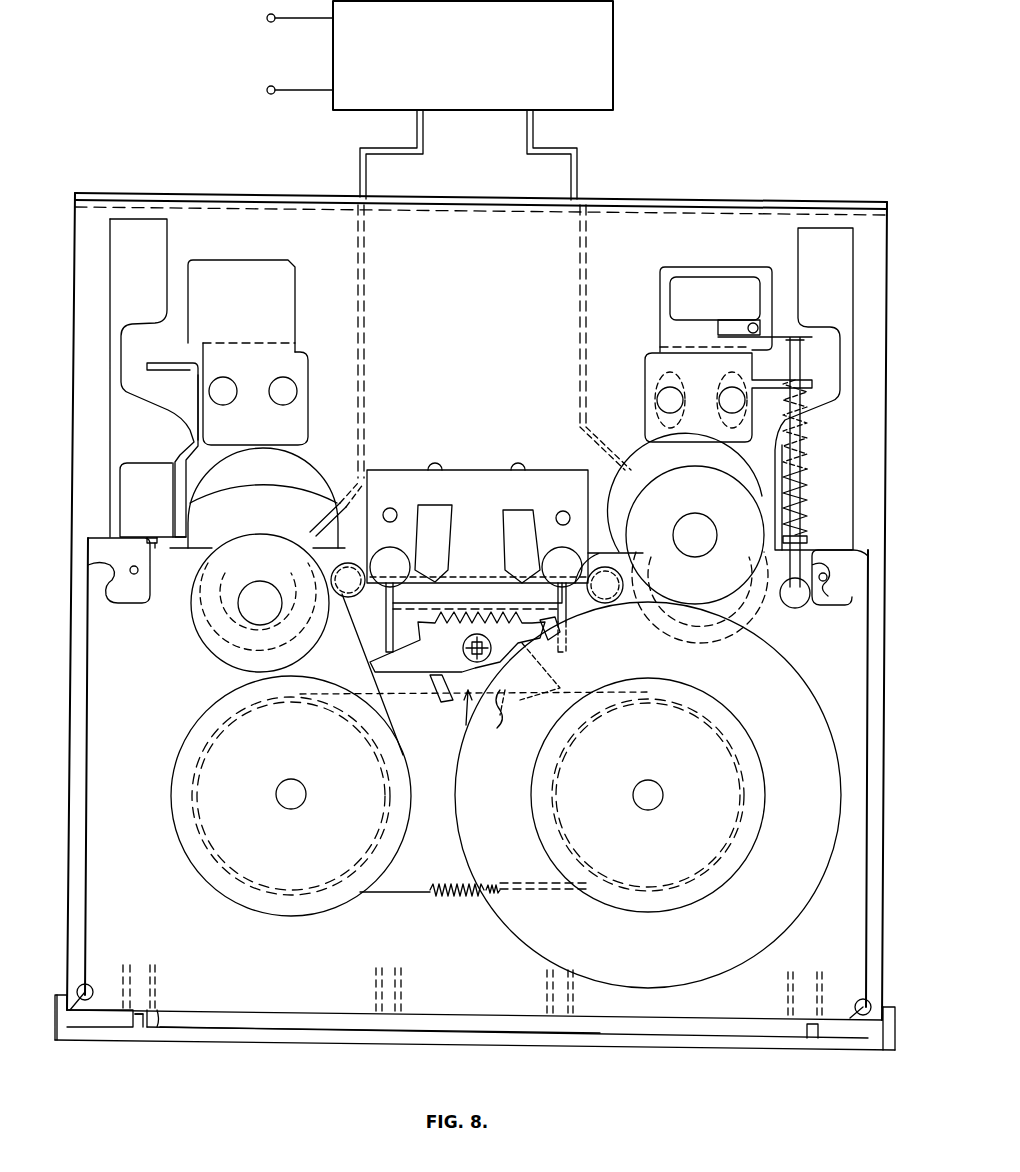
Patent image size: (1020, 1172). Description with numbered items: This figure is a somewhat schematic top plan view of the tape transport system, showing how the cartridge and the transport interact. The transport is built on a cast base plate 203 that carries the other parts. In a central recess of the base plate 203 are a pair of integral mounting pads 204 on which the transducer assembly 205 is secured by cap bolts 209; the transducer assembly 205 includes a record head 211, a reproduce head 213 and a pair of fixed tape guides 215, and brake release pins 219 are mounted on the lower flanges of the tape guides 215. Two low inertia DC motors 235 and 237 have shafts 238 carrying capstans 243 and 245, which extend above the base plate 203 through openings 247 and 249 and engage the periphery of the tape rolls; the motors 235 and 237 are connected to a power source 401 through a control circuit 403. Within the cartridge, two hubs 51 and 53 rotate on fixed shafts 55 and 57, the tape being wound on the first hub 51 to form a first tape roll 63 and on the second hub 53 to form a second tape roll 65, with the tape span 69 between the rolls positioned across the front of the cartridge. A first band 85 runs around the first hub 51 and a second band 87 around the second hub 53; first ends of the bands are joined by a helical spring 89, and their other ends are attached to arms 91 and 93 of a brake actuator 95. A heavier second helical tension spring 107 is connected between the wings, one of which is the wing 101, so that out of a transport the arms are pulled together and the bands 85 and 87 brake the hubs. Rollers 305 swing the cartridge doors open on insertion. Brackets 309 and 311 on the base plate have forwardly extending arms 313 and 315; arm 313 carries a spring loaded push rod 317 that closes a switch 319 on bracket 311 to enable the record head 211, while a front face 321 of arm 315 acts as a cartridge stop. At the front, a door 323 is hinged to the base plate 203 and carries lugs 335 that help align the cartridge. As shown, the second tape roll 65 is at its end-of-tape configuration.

The power source 401 is at (315, 68).
The control circuit 403 is at (613, 58).
The bracket 311 is at (295, 310).
The switch 319 is at (715, 285).
The bracket 309 is at (660, 303).
The spring loaded push rod 317 is at (800, 372).
The bracket arm 313 is at (772, 495).
The bracket arm 315 is at (178, 512).
The front face 321 is at (155, 545).
The cast base plate 203 is at (470, 353).
The opening 249 is at (290, 470).
The motor 237 is at (225, 495).
The capstan 245 is at (290, 545).
The motor shaft 238 is at (272, 597).
The mounting pads 204 is at (518, 463).
The transducer assembly 205 is at (479, 486).
The cap bolts 209 is at (568, 511).
The reproduce head 213 is at (435, 510).
The record head 211 is at (542, 490).
The fixed tape guides 215 is at (570, 560).
The brake release pins 219 is at (393, 601).
The tape span 69 is at (485, 580).
The motor 235 is at (636, 503).
The opening 247 is at (637, 458).
The capstan 243 is at (695, 535).
The wing 101 is at (473, 663).
The second helical tension spring 107 is at (568, 628).
The arm 93 is at (435, 696).
The brake actuator 95 is at (455, 714).
The arm 91 is at (489, 716).
The second hub 53 is at (291, 796).
The fixed shaft 57 is at (305, 789).
The first hub 51 is at (648, 795).
The fixed shaft 55 is at (660, 787).
The second tape roll 65 is at (252, 916).
The first tape roll 63 is at (738, 972).
The first band 85 is at (548, 890).
The second band 87 is at (445, 897).
The helical spring 89 is at (480, 908).
The rollers 305 is at (890, 1062).
The lugs 335 is at (157, 1030).
The door 323 is at (305, 1035).